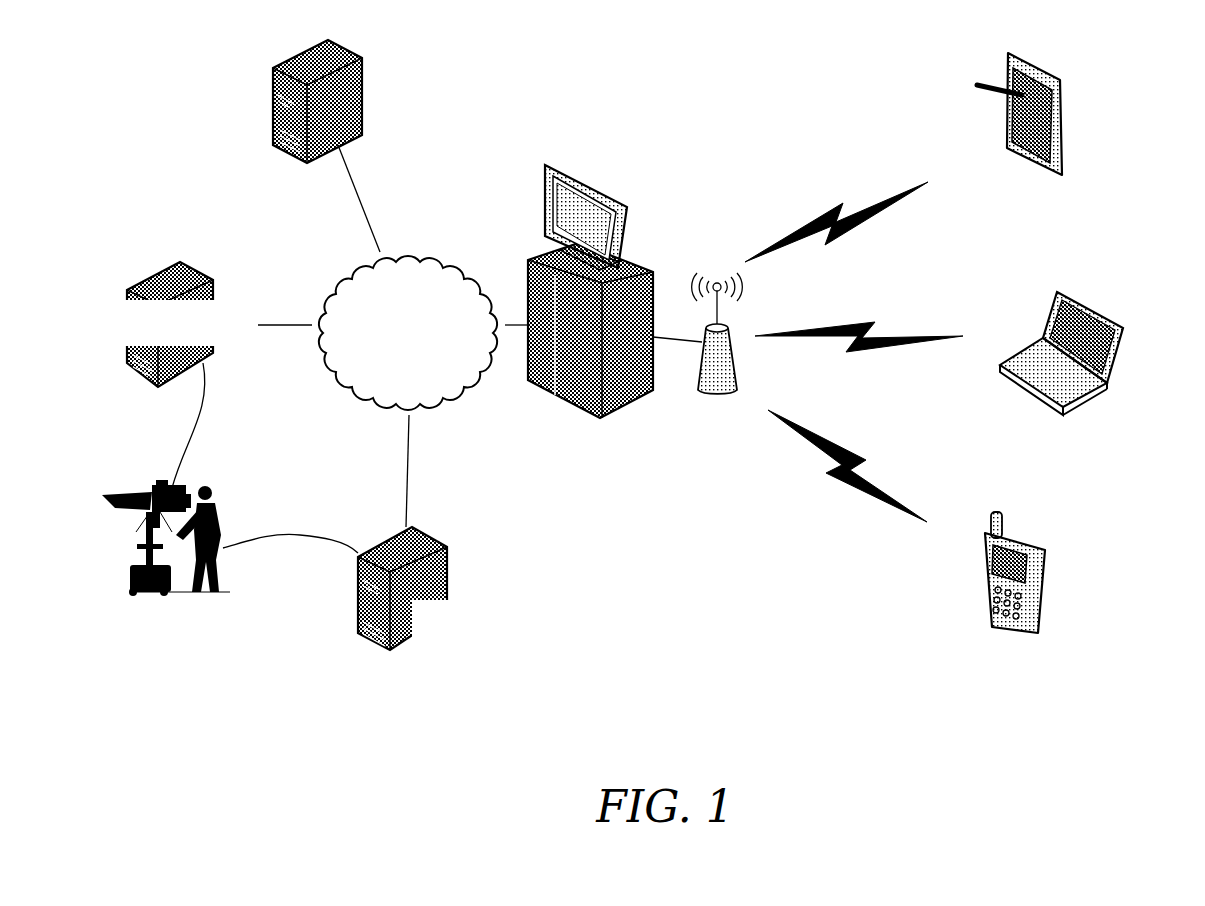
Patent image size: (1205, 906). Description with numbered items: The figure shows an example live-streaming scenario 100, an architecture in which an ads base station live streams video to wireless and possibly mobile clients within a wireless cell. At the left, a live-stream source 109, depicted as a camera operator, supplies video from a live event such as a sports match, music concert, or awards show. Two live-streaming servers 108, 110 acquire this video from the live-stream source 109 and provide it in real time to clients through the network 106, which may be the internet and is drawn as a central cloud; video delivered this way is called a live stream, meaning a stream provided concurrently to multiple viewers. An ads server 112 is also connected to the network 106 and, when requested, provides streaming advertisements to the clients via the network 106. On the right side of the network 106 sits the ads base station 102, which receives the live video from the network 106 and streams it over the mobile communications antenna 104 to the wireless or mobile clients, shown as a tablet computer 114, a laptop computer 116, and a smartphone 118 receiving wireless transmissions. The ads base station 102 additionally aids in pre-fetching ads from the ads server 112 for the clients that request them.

The live-streaming scenario 100 is at (752, 662).
The ads base station 102 is at (605, 188).
The mobile communications antenna 104 is at (728, 397).
The network 106 is at (450, 417).
The live-streaming server 108 is at (358, 603).
The live-stream source 109 is at (186, 485).
The live-streaming server 110 is at (193, 268).
The ads server 112 is at (362, 115).
The tablet computer 114 is at (1067, 120).
The laptop computer 116 is at (1110, 323).
The smartphone 118 is at (1043, 545).